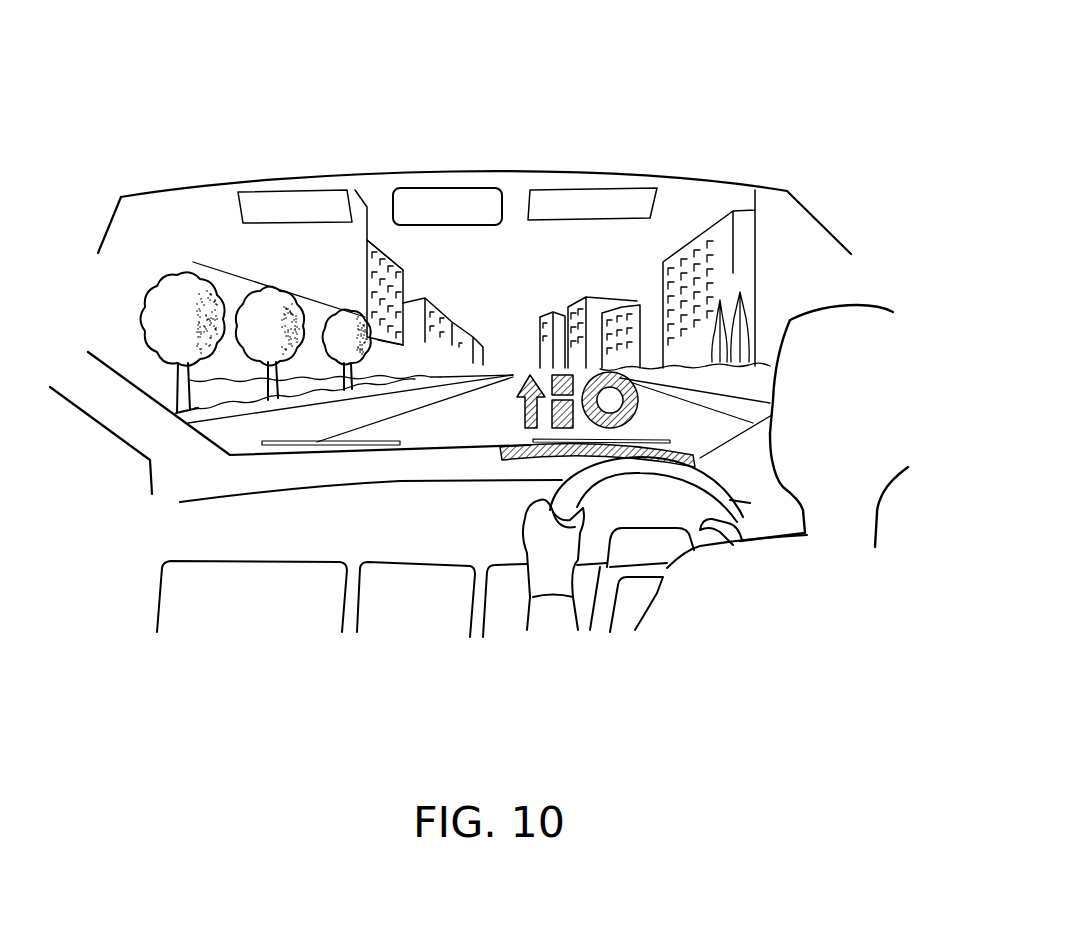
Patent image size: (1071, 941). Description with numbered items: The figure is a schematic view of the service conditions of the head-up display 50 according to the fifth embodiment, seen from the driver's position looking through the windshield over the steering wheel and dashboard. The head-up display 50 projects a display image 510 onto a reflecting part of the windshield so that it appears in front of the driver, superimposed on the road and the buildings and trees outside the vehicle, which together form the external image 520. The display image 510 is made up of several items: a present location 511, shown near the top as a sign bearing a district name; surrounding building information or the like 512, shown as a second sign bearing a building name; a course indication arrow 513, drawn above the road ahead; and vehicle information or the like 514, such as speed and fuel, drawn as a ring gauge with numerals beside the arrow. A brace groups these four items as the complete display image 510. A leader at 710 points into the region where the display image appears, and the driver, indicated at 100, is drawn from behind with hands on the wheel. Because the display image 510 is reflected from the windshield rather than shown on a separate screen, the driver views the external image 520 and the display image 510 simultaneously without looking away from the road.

The display image 510 is at (787, 98).
The present location 511 is at (588, 192).
The surrounding building information 512 is at (307, 190).
The course indication arrow 513 is at (515, 378).
The vehicle information 514 is at (614, 373).
The display area 710 is at (682, 332).
The external image 520 is at (742, 302).
The head-up display 50 is at (533, 452).
The driver 100 is at (847, 503).